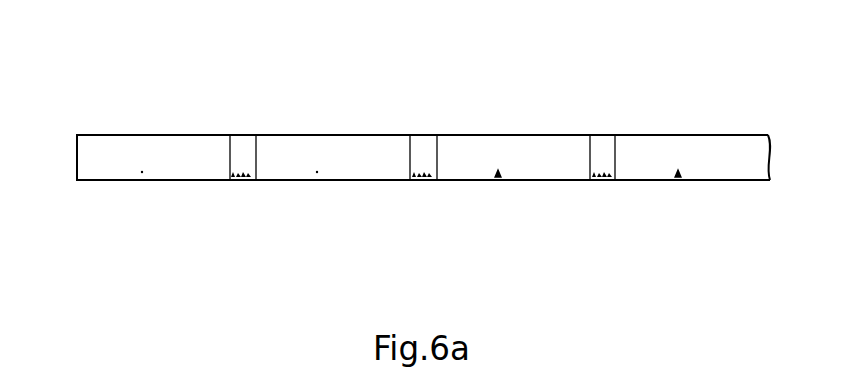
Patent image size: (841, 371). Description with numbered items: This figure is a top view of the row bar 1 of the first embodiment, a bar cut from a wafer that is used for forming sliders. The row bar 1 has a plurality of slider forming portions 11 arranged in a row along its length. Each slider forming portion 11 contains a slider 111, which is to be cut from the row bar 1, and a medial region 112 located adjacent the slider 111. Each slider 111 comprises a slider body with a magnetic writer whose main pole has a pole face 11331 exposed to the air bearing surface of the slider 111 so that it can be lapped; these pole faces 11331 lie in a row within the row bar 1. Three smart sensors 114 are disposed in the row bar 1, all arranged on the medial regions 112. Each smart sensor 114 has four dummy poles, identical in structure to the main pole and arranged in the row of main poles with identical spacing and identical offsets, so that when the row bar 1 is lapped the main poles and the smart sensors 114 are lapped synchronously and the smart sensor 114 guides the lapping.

The row bar 1 is at (64, 31).
The slider forming portion 11 is at (357, 65).
The slider 111 is at (338, 150).
The medial region 112 is at (241, 152).
The smart sensor 114 is at (245, 182).
The pole face 11331 is at (142, 172).